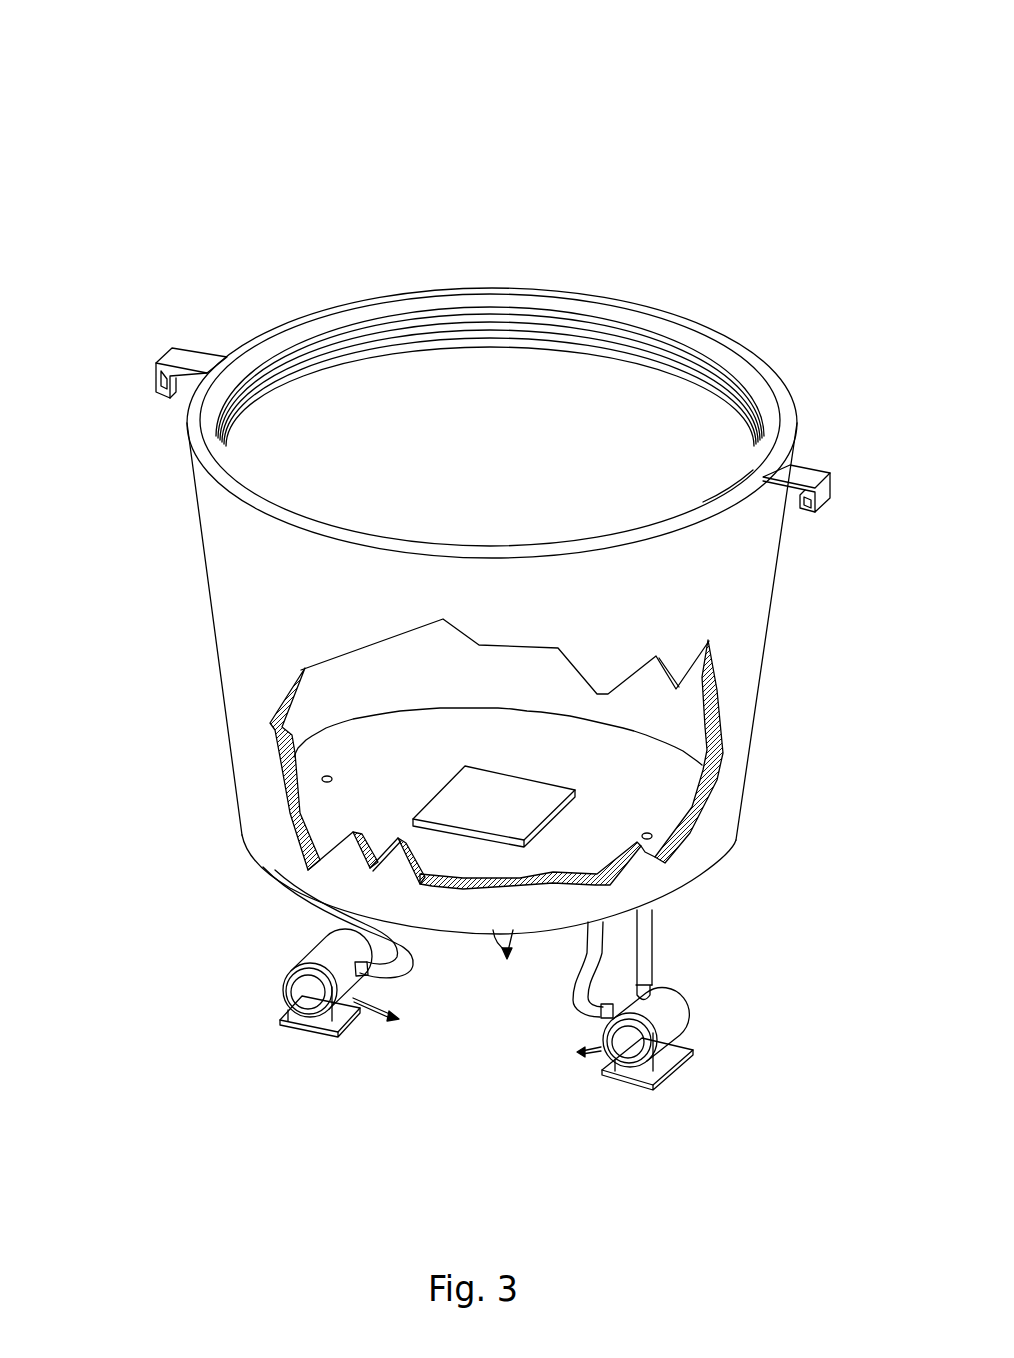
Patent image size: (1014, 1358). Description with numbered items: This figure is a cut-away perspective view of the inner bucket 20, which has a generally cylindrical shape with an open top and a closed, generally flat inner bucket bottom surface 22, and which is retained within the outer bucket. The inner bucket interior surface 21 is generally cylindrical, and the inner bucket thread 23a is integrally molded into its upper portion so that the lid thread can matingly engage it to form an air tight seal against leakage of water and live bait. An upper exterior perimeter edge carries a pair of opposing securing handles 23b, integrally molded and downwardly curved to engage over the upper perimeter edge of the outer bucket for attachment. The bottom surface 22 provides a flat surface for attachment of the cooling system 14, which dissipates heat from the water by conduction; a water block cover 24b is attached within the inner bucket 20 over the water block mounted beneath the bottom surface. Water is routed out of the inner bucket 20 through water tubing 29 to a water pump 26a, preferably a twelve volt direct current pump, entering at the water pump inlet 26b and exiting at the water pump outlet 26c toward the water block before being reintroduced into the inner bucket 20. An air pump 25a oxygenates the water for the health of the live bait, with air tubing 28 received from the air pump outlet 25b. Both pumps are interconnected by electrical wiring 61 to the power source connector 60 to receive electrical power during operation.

The inner bucket 20 is at (116, 109).
The cooling system 14 is at (582, 638).
The inner bucket interior surface 21 is at (443, 387).
The inner bucket bottom surface 22 is at (662, 797).
The inner bucket thread 23a is at (637, 346).
The securing handles 23b is at (180, 365).
The water block cover 24b is at (457, 790).
The air pump 25a is at (308, 955).
The air pump outlet 25b is at (357, 963).
The water pump 26a is at (677, 1010).
The water pump inlet 26b is at (647, 988).
The water pump outlet 26c is at (605, 1014).
The air tubing 28 is at (404, 969).
The water tubing 29 is at (588, 980).
The electrical wiring 61 is at (377, 1010).
The power source connector 60 is at (474, 1016).